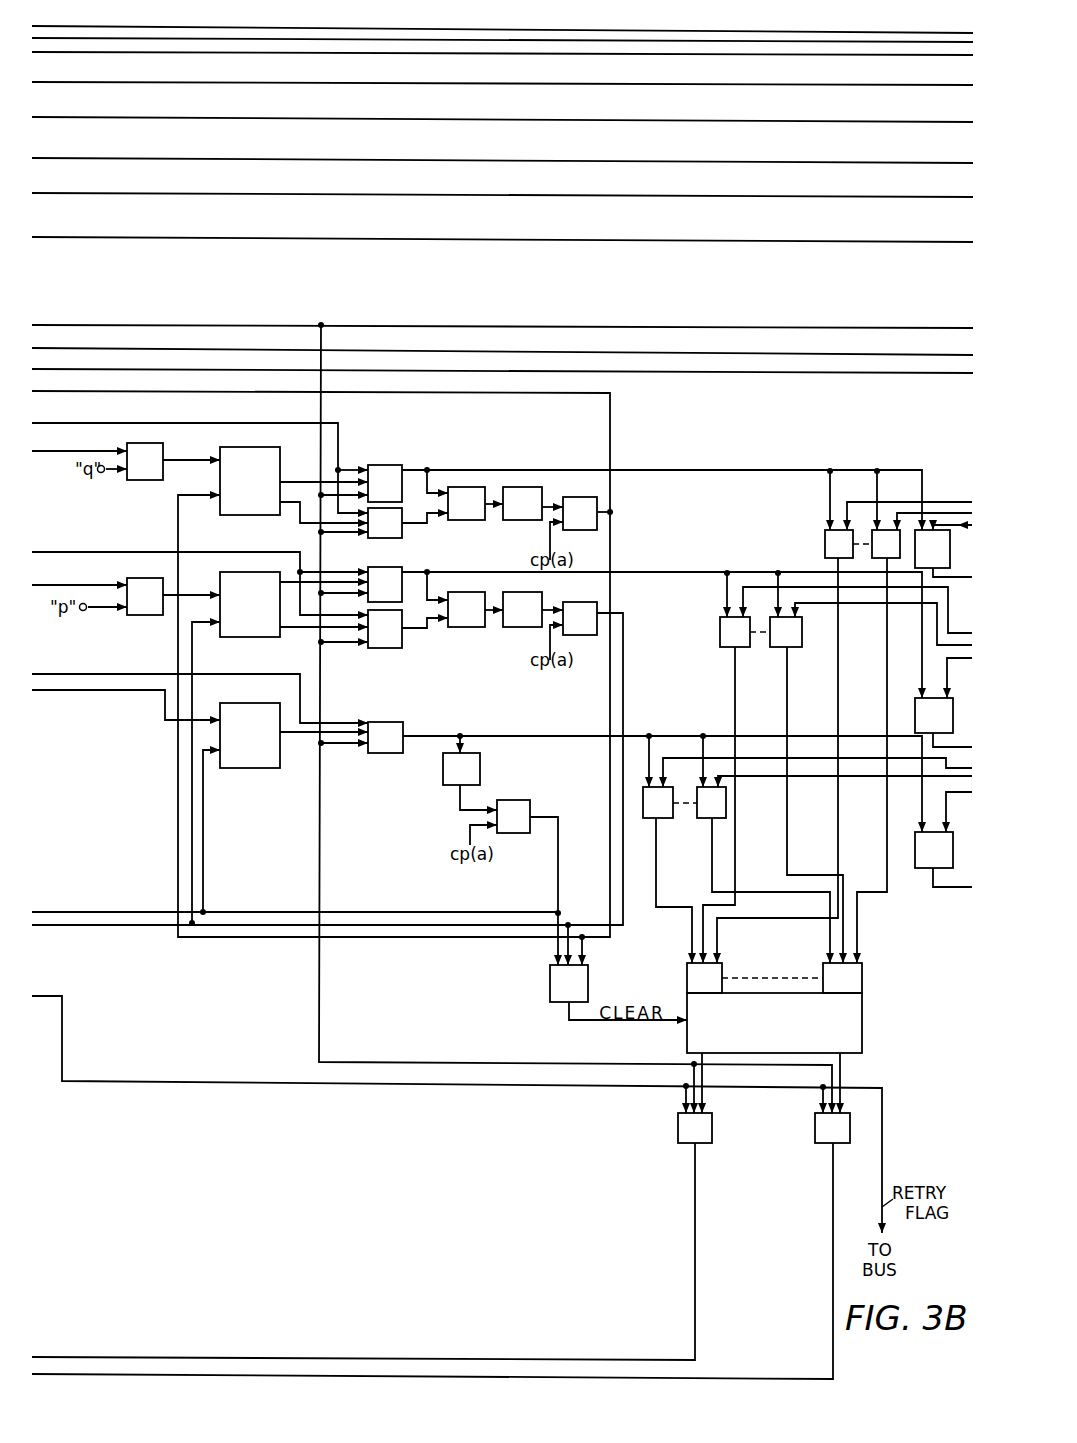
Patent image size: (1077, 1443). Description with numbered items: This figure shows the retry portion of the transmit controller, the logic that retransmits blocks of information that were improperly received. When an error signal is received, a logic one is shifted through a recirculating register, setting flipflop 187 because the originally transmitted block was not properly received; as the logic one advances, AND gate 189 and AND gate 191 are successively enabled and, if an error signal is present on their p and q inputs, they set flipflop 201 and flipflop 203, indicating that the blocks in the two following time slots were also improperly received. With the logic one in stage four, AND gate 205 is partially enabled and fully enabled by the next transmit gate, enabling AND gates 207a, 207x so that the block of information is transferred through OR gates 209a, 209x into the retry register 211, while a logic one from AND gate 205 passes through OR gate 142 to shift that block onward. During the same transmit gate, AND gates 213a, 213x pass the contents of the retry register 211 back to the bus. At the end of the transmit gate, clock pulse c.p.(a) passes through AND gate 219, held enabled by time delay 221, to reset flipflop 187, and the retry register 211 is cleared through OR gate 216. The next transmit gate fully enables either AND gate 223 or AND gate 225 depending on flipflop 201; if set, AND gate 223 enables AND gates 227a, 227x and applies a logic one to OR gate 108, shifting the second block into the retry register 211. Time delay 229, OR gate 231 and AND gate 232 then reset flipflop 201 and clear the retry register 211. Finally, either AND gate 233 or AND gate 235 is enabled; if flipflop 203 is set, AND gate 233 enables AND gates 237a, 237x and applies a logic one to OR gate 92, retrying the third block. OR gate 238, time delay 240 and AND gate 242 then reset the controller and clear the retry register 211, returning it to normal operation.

The AND gate 191 is at (147, 480).
The AND gate 189 is at (138, 615).
The flipflop 203 is at (250, 515).
The flipflop 201 is at (256, 637).
The flipflop 187 is at (268, 768).
The AND gate 233 is at (393, 465).
The AND gate 235 is at (385, 538).
The OR gate 238 is at (466, 487).
The time delay 240 is at (530, 487).
The AND gate 242 is at (597, 504).
The AND gate 223 is at (385, 567).
The AND gate 225 is at (385, 648).
The OR gate 231 is at (470, 627).
The time delay 229 is at (522, 627).
The AND gate 232 is at (597, 609).
The AND gate 205 is at (393, 722).
The time delay 221 is at (480, 768).
The AND gate 219 is at (525, 800).
The OR gate 216 is at (588, 975).
The AND gate 207a is at (665, 818).
The AND gate 207x is at (726, 800).
The AND gate 227a is at (720, 630).
The AND gate 227x is at (802, 643).
The AND gate 237a is at (825, 541).
The AND gate 237x is at (831, 526).
The OR gate 92 is at (936, 527).
The OR gate 108 is at (915, 712).
The OR gate 142 is at (921, 868).
The OR gate 209a is at (722, 967).
The OR gate 209x is at (862, 977).
The retry register 211 is at (862, 1012).
The AND gate 213a is at (678, 1128).
The AND gate 213x is at (815, 1128).